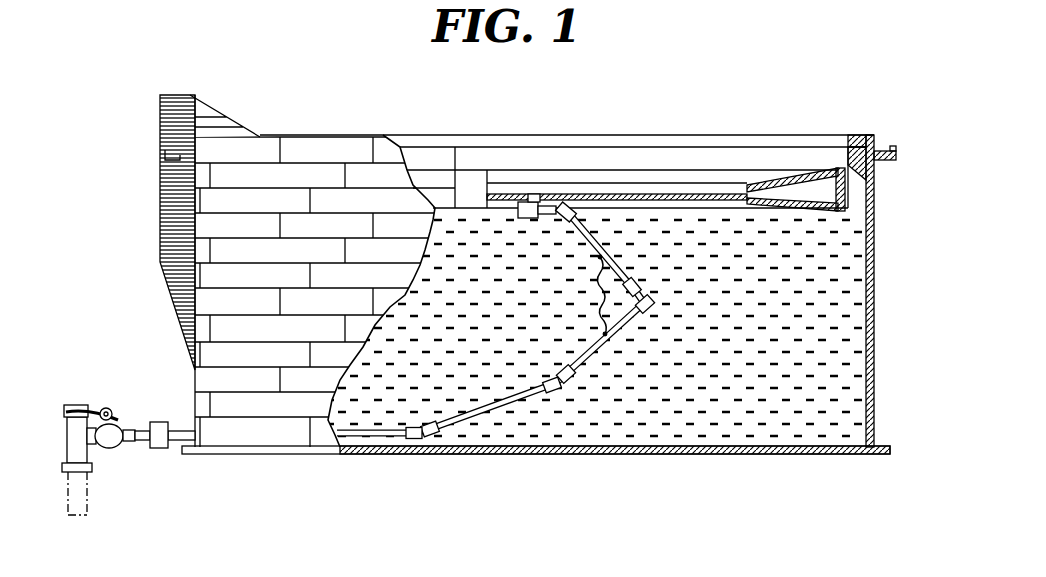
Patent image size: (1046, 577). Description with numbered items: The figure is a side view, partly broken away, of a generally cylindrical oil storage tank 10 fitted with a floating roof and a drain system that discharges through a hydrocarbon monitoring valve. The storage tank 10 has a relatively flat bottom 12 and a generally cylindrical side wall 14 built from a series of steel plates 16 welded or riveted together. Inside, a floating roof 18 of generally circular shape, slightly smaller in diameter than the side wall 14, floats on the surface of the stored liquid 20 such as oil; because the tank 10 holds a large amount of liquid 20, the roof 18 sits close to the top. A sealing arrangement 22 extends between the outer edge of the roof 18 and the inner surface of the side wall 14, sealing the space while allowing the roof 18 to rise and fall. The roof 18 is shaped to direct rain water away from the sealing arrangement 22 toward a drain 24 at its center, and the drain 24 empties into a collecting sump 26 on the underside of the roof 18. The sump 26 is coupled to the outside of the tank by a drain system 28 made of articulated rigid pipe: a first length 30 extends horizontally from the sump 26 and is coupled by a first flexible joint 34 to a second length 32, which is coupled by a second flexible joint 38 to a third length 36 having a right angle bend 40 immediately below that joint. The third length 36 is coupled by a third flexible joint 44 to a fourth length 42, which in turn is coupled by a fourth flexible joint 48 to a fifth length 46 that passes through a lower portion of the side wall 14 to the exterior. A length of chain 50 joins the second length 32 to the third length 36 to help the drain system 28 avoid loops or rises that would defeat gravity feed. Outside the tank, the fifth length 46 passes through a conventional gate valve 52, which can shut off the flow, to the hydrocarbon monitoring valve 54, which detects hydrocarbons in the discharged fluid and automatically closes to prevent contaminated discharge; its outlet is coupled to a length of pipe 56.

The storage tank 10 is at (872, 237).
The bottom 12 is at (728, 454).
The side wall 14 is at (876, 335).
The steel plates 16 is at (300, 143).
The floating roof 18 is at (650, 176).
The liquid 20 is at (804, 380).
The sealing arrangement 22 is at (848, 160).
The drain 24 is at (532, 195).
The collecting sump 26 is at (520, 212).
The drain system 28 is at (640, 272).
The first length of rigid pipe 30 is at (548, 218).
The second length of rigid pipe 32 is at (618, 262).
The first flexible joint 34 is at (578, 228).
The third length of rigid pipe 36 is at (612, 340).
The second flexible joint 38 is at (648, 292).
The right angle bend 40 is at (646, 310).
The fourth length of rigid pipe 42 is at (512, 398).
The third flexible joint 44 is at (585, 372).
The fifth length of rigid pipe 46 is at (362, 430).
The fourth flexible joint 48 is at (423, 426).
The chain 50 is at (596, 313).
The gate valve 52 is at (160, 448).
The hydrocarbon monitoring valve 54 is at (58, 428).
The length of pipe 56 is at (90, 492).